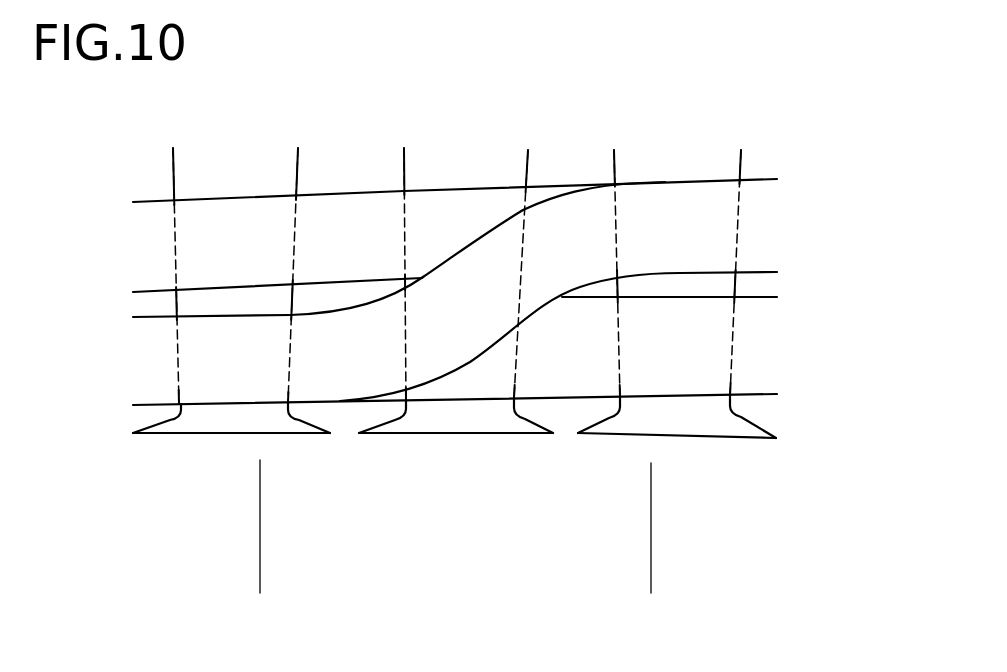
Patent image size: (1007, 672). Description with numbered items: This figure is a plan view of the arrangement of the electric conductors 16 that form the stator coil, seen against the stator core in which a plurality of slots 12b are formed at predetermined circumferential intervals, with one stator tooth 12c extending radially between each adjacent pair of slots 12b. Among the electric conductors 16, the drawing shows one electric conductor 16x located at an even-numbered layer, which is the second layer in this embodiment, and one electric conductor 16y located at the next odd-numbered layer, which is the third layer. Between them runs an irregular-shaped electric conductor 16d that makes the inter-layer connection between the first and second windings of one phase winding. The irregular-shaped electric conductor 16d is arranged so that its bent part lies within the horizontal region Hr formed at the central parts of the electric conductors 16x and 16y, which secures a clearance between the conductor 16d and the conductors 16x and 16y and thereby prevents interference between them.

The electric conductor 16 is at (462, 296).
The electric conductor at the 2nth layer 16x is at (232, 242).
The electric conductor at the (2n+1)th layer 16y is at (685, 360).
The irregular-shaped electric conductor 16d is at (473, 302).
The slot 12b is at (404, 180).
The stator tooth 12c is at (651, 412).
The horizontal region Hr is at (651, 580).